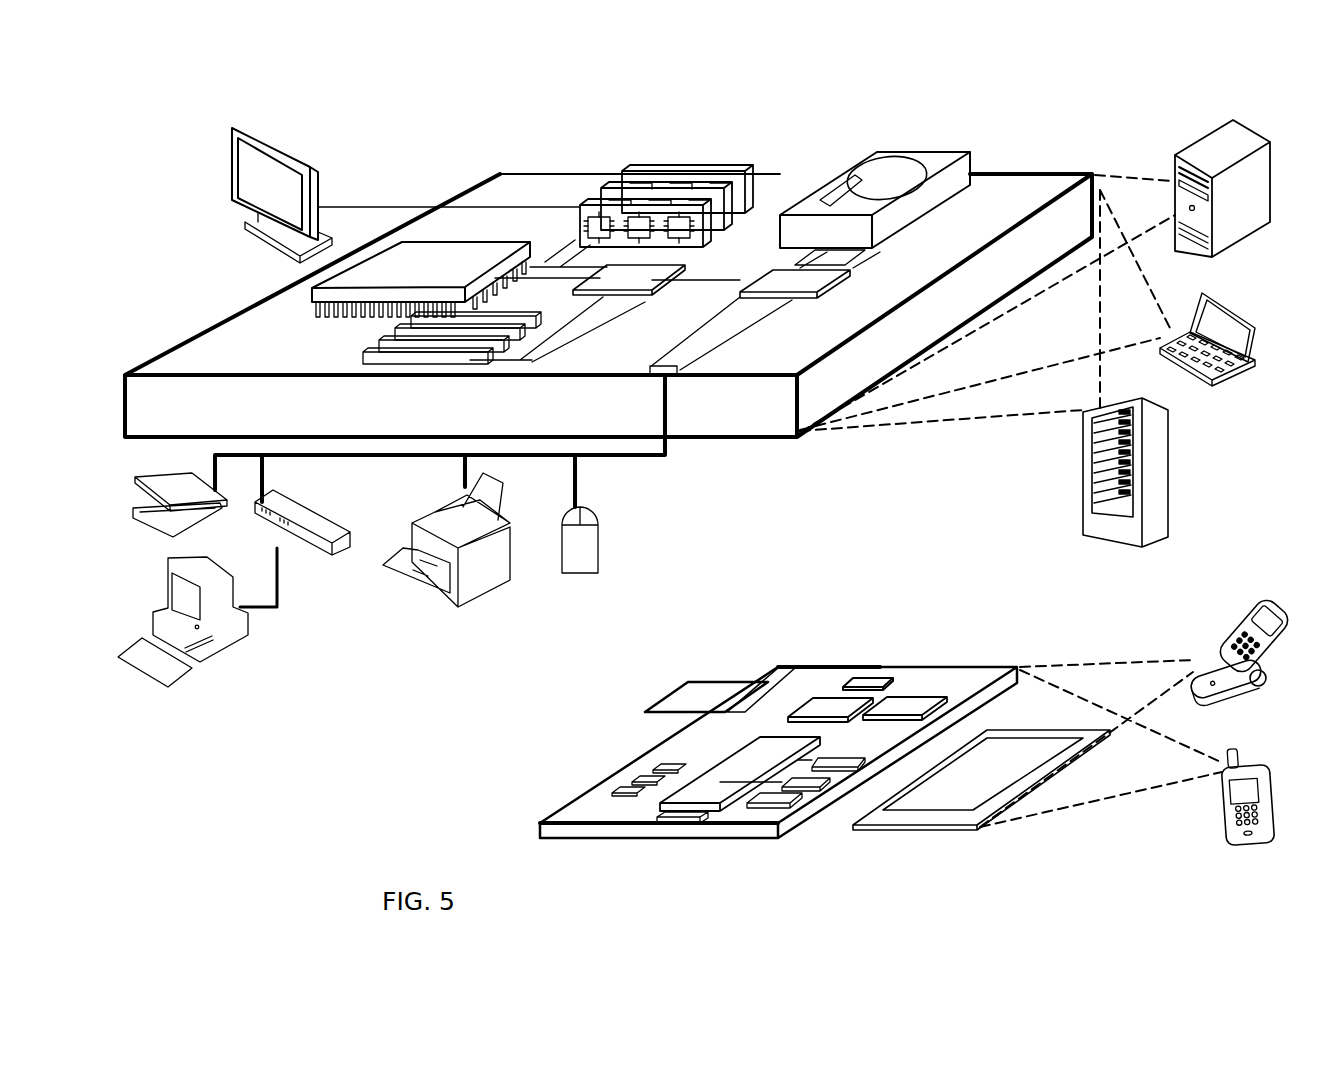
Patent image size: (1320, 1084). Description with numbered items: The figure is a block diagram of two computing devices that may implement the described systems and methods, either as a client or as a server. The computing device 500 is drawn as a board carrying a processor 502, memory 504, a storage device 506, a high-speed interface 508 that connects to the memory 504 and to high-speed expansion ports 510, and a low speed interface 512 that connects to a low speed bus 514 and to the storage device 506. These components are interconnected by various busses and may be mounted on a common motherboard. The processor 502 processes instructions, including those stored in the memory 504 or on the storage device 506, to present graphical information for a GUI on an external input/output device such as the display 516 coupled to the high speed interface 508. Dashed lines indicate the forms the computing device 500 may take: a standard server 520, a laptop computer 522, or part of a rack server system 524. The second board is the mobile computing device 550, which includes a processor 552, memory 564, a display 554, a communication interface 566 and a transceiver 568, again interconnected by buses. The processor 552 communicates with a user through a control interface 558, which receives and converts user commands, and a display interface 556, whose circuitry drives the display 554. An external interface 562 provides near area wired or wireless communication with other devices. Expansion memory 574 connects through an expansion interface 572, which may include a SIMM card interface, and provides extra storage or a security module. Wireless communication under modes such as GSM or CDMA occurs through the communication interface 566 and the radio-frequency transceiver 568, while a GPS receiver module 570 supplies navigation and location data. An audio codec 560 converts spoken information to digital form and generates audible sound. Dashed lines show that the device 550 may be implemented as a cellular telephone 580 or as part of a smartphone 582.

The computing device 500 is at (437, 142).
The processor 502 is at (283, 292).
The memory 504 is at (642, 166).
The storage device 506 is at (865, 160).
The high-speed interface 508 is at (600, 272).
The high-speed expansion ports 510 is at (375, 340).
The low speed interface 512 is at (796, 271).
The low speed bus 514 is at (667, 378).
The display 516 is at (233, 130).
The standard server 520 is at (1172, 167).
The laptop computer 522 is at (1200, 294).
The rack server system 524 is at (1082, 497).
The mobile computing device 550 is at (759, 641).
The processor 552 is at (715, 803).
The display 554 is at (978, 826).
The display interface 556 is at (789, 820).
The control interface 558 is at (820, 791).
The audio codec 560 is at (834, 767).
The external interface 562 is at (677, 824).
The memory 564 is at (631, 784).
The communication interface 566 is at (830, 705).
The transceiver 568 is at (905, 705).
The GPS receiver module 570 is at (868, 671).
The expansion interface 572 is at (754, 682).
The expansion memory 574 is at (686, 682).
The cellular telephone 580 is at (1251, 608).
The smartphone 582 is at (1232, 749).